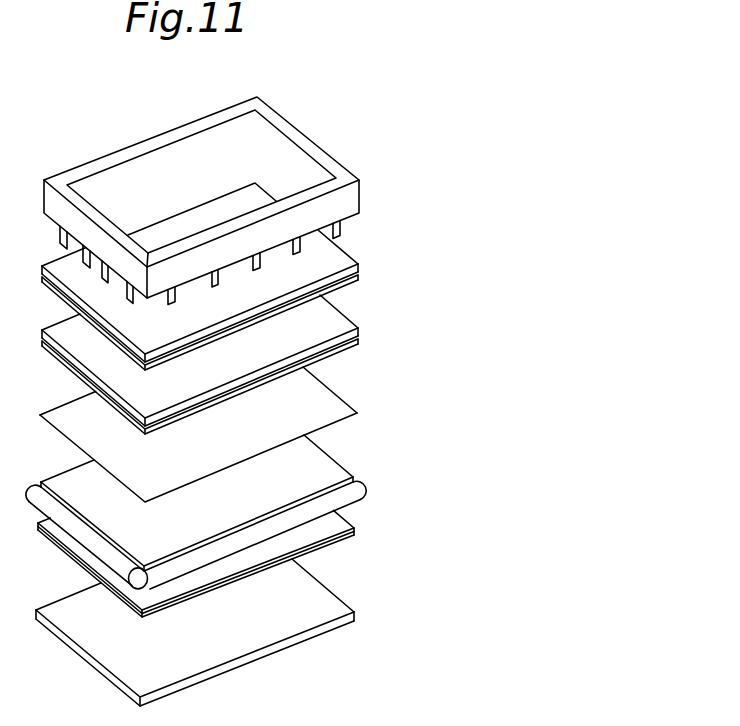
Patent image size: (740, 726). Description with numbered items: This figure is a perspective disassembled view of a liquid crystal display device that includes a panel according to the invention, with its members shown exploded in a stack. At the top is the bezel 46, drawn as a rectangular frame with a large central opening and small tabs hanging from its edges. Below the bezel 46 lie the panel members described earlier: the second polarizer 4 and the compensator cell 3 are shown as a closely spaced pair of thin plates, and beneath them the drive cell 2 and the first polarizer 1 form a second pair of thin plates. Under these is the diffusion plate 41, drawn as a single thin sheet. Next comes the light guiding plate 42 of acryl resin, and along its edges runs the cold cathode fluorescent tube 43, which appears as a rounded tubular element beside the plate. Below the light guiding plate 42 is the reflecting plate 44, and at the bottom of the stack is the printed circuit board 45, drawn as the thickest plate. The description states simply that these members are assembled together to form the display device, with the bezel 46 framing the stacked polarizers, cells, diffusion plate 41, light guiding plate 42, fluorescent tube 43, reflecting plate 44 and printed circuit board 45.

The bezel 46 is at (359, 180).
The second polarizer 4 is at (356, 265).
The compensator cell 3 is at (356, 277).
The drive cell 2 is at (356, 328).
The first polarizer 1 is at (356, 346).
The diffusion plate 41 is at (357, 414).
The cold cathode fluorescent tube 43 is at (353, 477).
The light guiding plate 42 is at (366, 494).
The reflecting plate 44 is at (354, 528).
The printed circuit board 45 is at (354, 612).